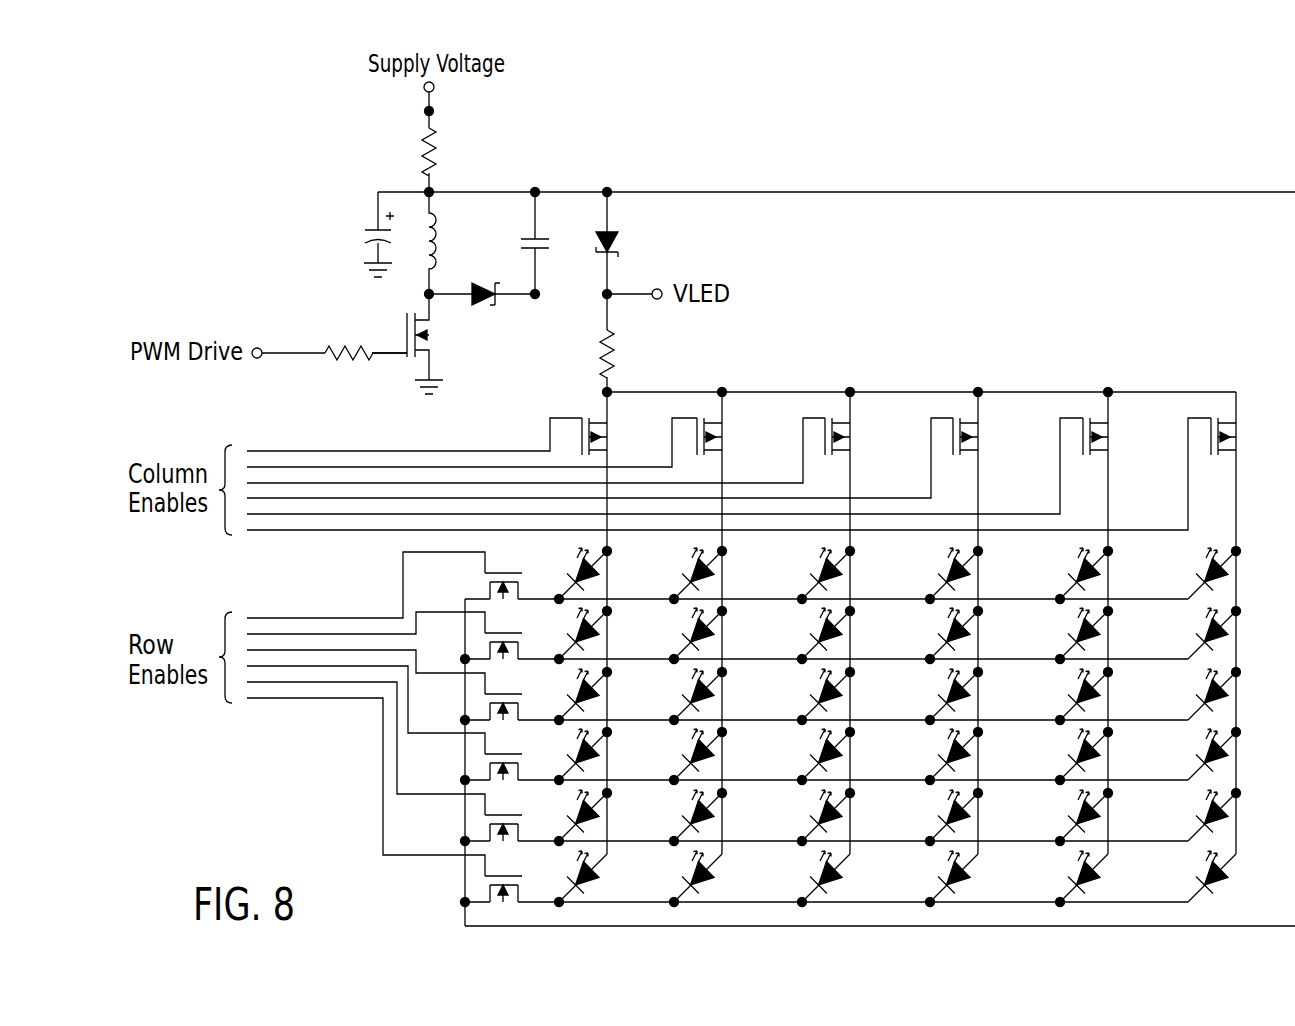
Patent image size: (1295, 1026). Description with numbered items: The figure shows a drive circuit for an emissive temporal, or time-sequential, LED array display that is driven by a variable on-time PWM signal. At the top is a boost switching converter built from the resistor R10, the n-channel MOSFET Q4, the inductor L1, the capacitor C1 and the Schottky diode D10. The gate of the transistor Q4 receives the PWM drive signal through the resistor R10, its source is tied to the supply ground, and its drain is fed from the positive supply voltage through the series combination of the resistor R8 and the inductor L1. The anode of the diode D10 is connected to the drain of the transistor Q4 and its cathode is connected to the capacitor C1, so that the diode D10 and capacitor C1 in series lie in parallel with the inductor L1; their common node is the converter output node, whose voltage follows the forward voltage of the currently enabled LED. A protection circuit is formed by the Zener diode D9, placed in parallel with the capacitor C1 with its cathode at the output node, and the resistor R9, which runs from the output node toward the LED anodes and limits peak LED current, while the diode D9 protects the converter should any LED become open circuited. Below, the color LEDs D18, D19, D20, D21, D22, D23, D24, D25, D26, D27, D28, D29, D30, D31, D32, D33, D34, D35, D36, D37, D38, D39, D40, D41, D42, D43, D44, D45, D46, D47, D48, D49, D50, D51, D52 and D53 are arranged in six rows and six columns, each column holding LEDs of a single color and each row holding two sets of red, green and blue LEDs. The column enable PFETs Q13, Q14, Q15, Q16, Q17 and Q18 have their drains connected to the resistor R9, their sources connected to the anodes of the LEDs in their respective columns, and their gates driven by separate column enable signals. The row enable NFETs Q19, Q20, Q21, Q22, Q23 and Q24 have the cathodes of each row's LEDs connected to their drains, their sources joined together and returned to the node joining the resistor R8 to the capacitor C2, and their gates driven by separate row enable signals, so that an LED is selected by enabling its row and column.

The resistor R8 is at (437, 161).
The capacitor C2 is at (366, 228).
The inductor L1 is at (440, 219).
The capacitor C1 is at (543, 240).
The Zener diode D9 is at (620, 230).
The Schottky diode D10 is at (506, 306).
The n-channel MOSFET Q4 is at (434, 334).
The resistor R10 is at (330, 346).
The resistor R9 is at (626, 340).
The column enable PFET Q13 is at (451, 623).
The column enable PFET Q14 is at (508, 621).
The column enable PFET Q15 is at (572, 621).
The column enable PFET Q16 is at (636, 621).
The column enable PFET Q17 is at (701, 621).
The column enable PFET Q18 is at (765, 623).
The row enable NFET Q19 is at (717, 582).
The row enable NFET Q20 is at (717, 632).
The row enable NFET Q21 is at (717, 685).
The row enable NFET Q22 is at (717, 723).
The row enable NFET Q23 is at (717, 761).
The row enable NFET Q24 is at (717, 800).
The color LED D18 is at (606, 572).
The color LED D19 is at (730, 572).
The color LED D20 is at (850, 572).
The color LED D21 is at (977, 572).
The color LED D22 is at (1116, 572).
The color LED D23 is at (1238, 570).
The color LED D24 is at (606, 632).
The color LED D25 is at (730, 632).
The color LED D26 is at (850, 632).
The color LED D27 is at (977, 632).
The color LED D28 is at (1116, 632).
The color LED D29 is at (1238, 630).
The color LED D30 is at (606, 693).
The color LED D31 is at (730, 693).
The color LED D32 is at (850, 693).
The color LED D33 is at (977, 693).
The color LED D34 is at (1116, 693).
The color LED D35 is at (1238, 691).
The color LED D36 is at (606, 753).
The color LED D37 is at (730, 753).
The color LED D38 is at (850, 753).
The color LED D39 is at (977, 753).
The color LED D40 is at (1116, 753).
The color LED D41 is at (1238, 751).
The color LED D42 is at (606, 814).
The color LED D43 is at (730, 814).
The color LED D44 is at (850, 814).
The color LED D45 is at (977, 814).
The color LED D46 is at (1116, 814).
The color LED D47 is at (1238, 812).
The color LED D48 is at (606, 875).
The color LED D49 is at (730, 875).
The color LED D50 is at (850, 875).
The color LED D51 is at (977, 875).
The color LED D52 is at (1116, 875).
The color LED D53 is at (1238, 873).